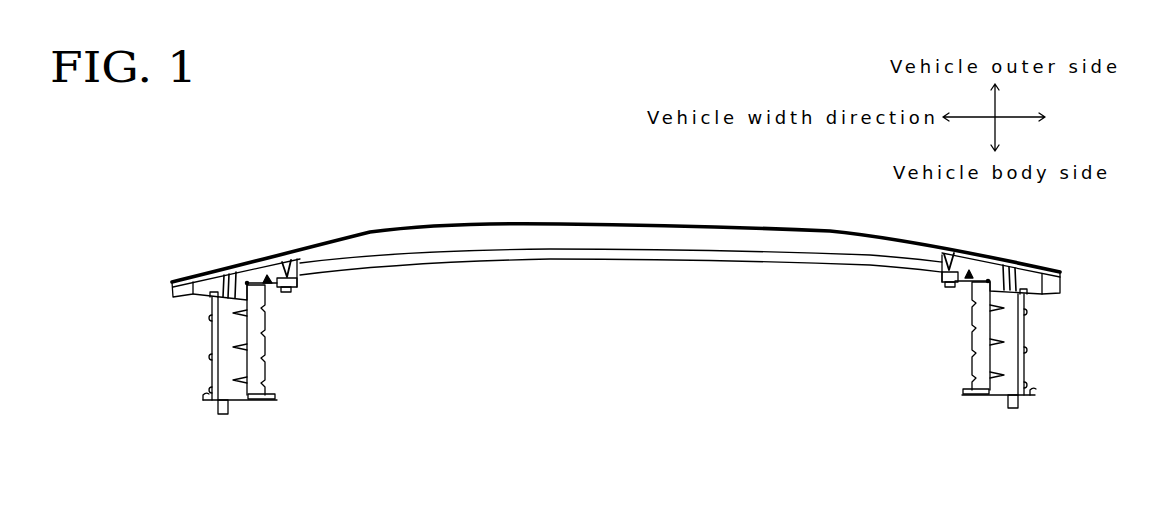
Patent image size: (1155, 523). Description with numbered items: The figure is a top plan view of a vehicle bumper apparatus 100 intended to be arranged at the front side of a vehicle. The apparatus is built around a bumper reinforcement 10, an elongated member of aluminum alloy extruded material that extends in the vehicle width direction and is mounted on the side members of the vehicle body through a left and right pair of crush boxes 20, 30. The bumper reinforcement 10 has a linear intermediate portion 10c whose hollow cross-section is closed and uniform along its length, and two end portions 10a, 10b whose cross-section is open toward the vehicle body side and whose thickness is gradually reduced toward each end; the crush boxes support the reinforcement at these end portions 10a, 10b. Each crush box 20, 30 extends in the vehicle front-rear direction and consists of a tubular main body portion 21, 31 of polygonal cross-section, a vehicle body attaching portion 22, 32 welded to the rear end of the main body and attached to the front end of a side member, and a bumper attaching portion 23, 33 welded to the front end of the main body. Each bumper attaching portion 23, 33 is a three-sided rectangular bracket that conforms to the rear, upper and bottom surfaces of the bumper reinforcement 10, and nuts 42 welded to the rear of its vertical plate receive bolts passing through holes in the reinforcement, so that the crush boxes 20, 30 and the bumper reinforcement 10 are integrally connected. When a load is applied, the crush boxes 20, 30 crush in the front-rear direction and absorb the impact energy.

The vehicle bumper apparatus 100 is at (455, 201).
The bumper reinforcement 10 is at (621, 221).
The end portion 10a is at (172, 291).
The end portion 10b is at (1053, 276).
The intermediate portion 10c is at (600, 246).
The crush box 20 is at (257, 409).
The main body portion 21 is at (212, 342).
The vehicle body attaching portion 22 is at (217, 404).
The bumper attaching portion 23 is at (255, 276).
The crush box 30 is at (990, 407).
The main body portion 31 is at (1012, 332).
The vehicle body attaching portion 32 is at (1030, 400).
The bumper attaching portion 33 is at (991, 270).
The nut 42 is at (290, 292).